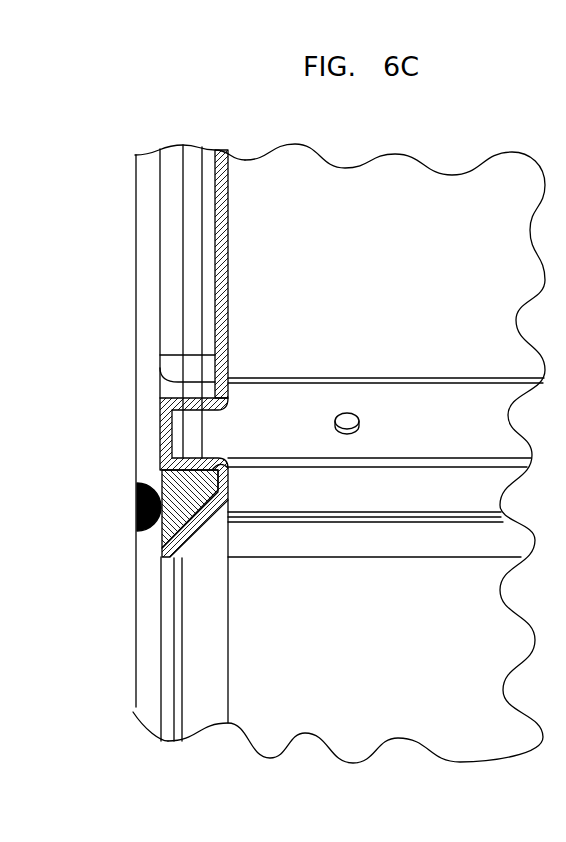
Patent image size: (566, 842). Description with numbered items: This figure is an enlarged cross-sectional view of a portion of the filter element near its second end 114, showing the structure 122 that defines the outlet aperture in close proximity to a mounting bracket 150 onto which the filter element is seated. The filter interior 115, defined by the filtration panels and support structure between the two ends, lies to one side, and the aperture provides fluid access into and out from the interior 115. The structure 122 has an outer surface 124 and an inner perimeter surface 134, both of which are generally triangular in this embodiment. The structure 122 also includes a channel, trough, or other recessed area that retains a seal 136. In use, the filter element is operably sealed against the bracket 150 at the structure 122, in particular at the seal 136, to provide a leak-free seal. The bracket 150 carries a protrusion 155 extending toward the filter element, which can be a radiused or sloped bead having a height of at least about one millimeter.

The second end 114 is at (213, 243).
The filter interior 115 is at (385, 660).
The structure 122 is at (190, 553).
The outer surface 124 is at (170, 400).
The inner perimeter surface 134 is at (170, 558).
The seal 136 is at (172, 478).
The mounting bracket 150 is at (135, 320).
The protrusion 155 is at (138, 515).